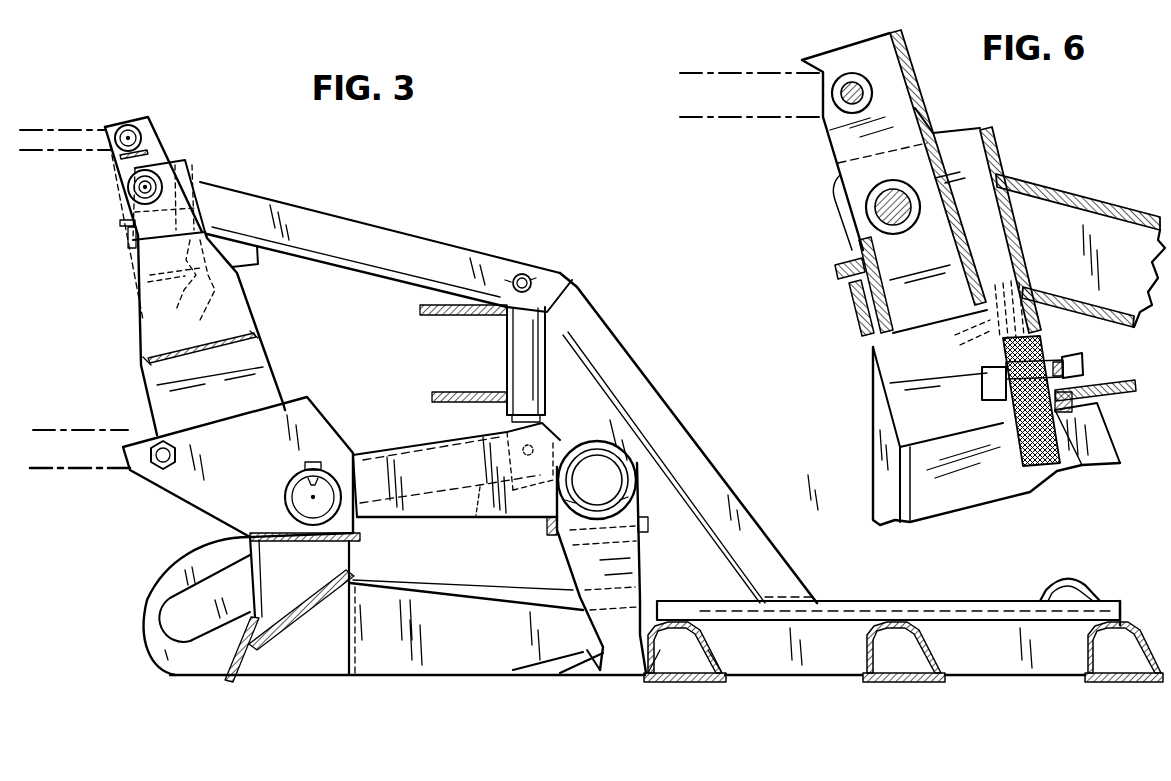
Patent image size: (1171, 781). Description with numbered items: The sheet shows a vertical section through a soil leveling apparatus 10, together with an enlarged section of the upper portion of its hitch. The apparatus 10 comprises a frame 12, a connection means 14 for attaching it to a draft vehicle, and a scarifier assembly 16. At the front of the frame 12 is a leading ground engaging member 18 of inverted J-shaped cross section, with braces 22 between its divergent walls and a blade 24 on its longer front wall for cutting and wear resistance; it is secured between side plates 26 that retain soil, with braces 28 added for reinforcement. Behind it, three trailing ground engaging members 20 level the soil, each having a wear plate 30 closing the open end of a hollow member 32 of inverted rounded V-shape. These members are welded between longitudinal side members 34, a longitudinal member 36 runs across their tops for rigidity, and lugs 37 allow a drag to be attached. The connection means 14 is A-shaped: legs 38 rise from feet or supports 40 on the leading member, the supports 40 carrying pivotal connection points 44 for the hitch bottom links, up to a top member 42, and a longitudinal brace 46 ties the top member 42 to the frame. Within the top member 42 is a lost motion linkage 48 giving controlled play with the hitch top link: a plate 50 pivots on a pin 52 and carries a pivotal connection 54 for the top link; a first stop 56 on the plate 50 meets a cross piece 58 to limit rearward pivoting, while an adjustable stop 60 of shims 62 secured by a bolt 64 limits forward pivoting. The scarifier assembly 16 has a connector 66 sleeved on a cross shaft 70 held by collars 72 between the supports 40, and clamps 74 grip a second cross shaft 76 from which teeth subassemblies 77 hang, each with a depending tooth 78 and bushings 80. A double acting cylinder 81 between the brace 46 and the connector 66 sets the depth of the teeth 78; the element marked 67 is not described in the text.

In FIG. 3, the soil leveling apparatus 10 is at (481, 210).
In FIG. 3, the frame 12 is at (452, 688).
In FIG. 3, the connection means 14 is at (198, 155).
In FIG. 6, the connection means 14 is at (1013, 148).
In FIG. 3, the scarifier assembly 16 is at (640, 450).
In FIG. 3, the leading ground engaging member 18 is at (360, 553).
In FIG. 3, the trailing ground engaging members 20 is at (726, 651).
In FIG. 3, the braces 22 is at (310, 617).
In FIG. 3, the blade 24 is at (215, 681).
In FIG. 3, the side plates 26 is at (150, 661).
In FIG. 3, the braces 28 is at (168, 618).
In FIG. 3, the wear plate 30 is at (668, 686).
In FIG. 3, the hollow member 32 is at (722, 668).
In FIG. 3, the longitudinal side members 34 is at (850, 600).
In FIG. 3, the longitudinal member 36 is at (930, 603).
In FIG. 3, the lugs 37 is at (1052, 584).
In FIG. 3, the legs 38 is at (157, 386).
In FIG. 6, the legs 38 is at (883, 495).
In FIG. 3, the feet or supports 40 is at (183, 490).
In FIG. 3, the top member 42 is at (187, 193).
In FIG. 6, the top member 42 is at (992, 133).
In FIG. 3, the pivotal connection points 44 is at (157, 463).
In FIG. 3, the longitudinal brace 46 is at (371, 237).
In FIG. 6, the longitudinal brace 46 is at (1095, 190).
In FIG. 3, the lost motion linkage 48 is at (160, 116).
In FIG. 6, the lost motion linkage 48 is at (912, 50).
In FIG. 3, the plate 50 is at (158, 145).
In FIG. 6, the plate 50 is at (916, 100).
In FIG. 3, the pin 52 is at (130, 198).
In FIG. 6, the pin 52 is at (880, 210).
In FIG. 3, the pivotal connection 54 is at (127, 126).
In FIG. 6, the pivotal connection 54 is at (845, 104).
In FIG. 3, the first stop 56 is at (120, 230).
In FIG. 6, the first stop 56 is at (836, 273).
In FIG. 3, the cross piece 58 is at (127, 250).
In FIG. 6, the cross piece 58 is at (850, 312).
In FIG. 3, the adjustable stop 60 is at (232, 300).
In FIG. 6, the adjustable stop 60 is at (1000, 444).
In FIG. 3, the shims 62 is at (200, 302).
In FIG. 6, the shims 62 is at (1006, 479).
In FIG. 3, the bolt 64 is at (174, 282).
In FIG. 6, the bolt 64 is at (980, 392).
In FIG. 3, the connector 66 is at (451, 510).
In FIG. 3, the hidden fastener 67 is at (477, 510).
In FIG. 3, the cross shaft 70 is at (284, 497).
In FIG. 3, the collars 72 is at (300, 472).
In FIG. 3, the clamps 74 is at (552, 537).
In FIG. 3, the second cross shaft 76 is at (594, 452).
In FIG. 3, the teeth subassemblies 77 is at (646, 579).
In FIG. 3, the tooth 78 is at (596, 598).
In FIG. 3, the bushings 80 is at (640, 476).
In FIG. 3, the double acting cylinder 81 is at (510, 358).